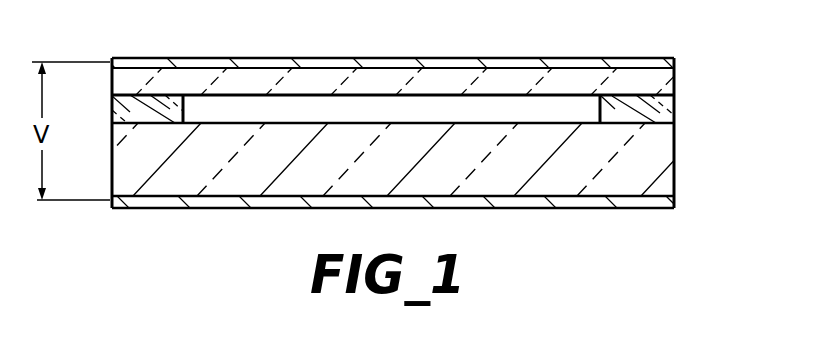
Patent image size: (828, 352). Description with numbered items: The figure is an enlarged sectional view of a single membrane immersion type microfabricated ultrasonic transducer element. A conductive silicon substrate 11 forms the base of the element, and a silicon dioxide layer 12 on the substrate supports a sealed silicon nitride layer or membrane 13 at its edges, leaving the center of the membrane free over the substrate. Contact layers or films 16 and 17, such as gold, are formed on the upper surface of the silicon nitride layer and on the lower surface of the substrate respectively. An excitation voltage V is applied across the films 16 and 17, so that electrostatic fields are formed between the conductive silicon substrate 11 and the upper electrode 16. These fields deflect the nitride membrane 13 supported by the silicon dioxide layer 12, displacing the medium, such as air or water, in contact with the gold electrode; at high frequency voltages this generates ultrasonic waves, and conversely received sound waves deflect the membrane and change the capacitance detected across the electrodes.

The conductive silicon substrate 11 is at (385, 155).
The silicon dioxide layer 12 is at (160, 103).
The silicon nitride layer (membrane) 13 is at (614, 78).
The contact layer (upper electrode) 16 is at (674, 60).
The contact layer (lower film) 17 is at (665, 203).